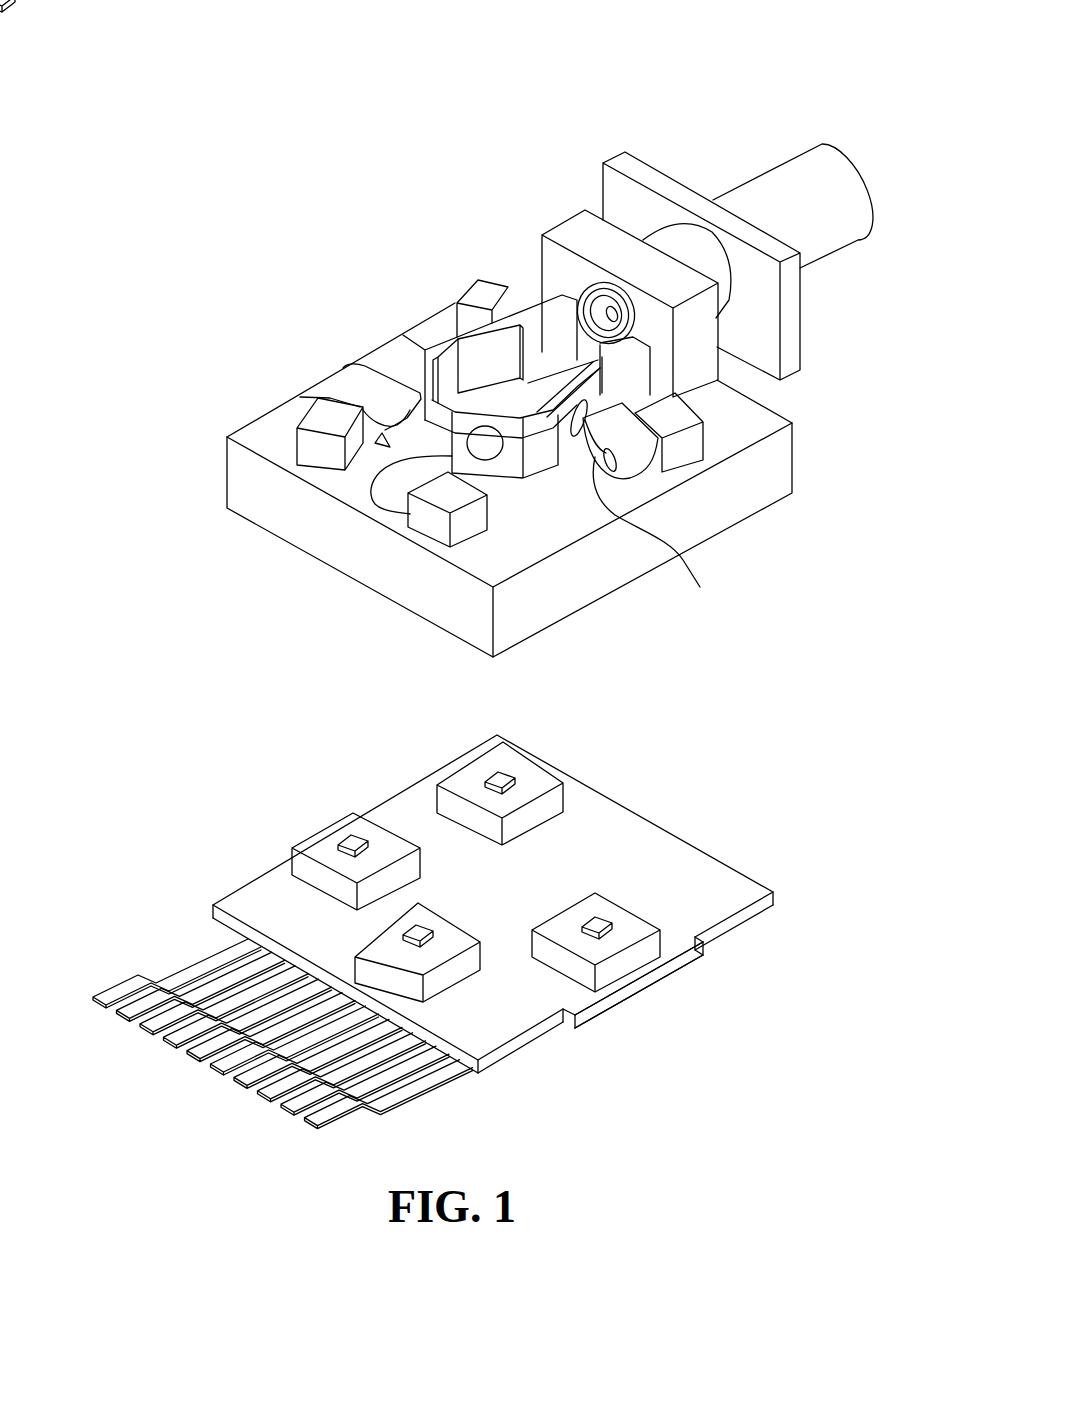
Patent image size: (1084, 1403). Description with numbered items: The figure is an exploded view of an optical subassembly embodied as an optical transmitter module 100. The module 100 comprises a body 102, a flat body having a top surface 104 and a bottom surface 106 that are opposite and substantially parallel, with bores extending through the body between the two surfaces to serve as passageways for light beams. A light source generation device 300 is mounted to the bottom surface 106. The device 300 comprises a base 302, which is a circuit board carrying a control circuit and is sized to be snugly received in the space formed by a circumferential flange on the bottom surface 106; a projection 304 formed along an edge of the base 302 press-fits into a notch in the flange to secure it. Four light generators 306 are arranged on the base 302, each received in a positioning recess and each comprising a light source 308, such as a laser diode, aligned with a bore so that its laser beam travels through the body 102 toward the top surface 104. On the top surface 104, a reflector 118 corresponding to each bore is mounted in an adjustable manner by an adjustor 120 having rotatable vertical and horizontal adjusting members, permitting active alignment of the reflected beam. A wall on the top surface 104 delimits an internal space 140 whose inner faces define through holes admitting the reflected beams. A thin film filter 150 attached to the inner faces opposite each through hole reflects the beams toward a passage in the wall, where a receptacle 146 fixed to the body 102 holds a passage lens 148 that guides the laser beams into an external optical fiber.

The optical transmitter module 100 is at (212, 34).
The body 102 is at (627, 140).
The top surface 104 is at (558, 523).
The bottom surface 106 is at (723, 530).
The reflector 118 is at (308, 400).
The adjustor 120 is at (482, 273).
The internal space 140 is at (533, 392).
The receptacle 146 is at (705, 259).
The passage lens 148 is at (615, 315).
The thin film filter 150 is at (489, 328).
The light source generation device 300 is at (752, 930).
The base 302 is at (607, 826).
The projection 304 is at (617, 1010).
The light generator 306 is at (313, 848).
The light source 308 is at (413, 933).